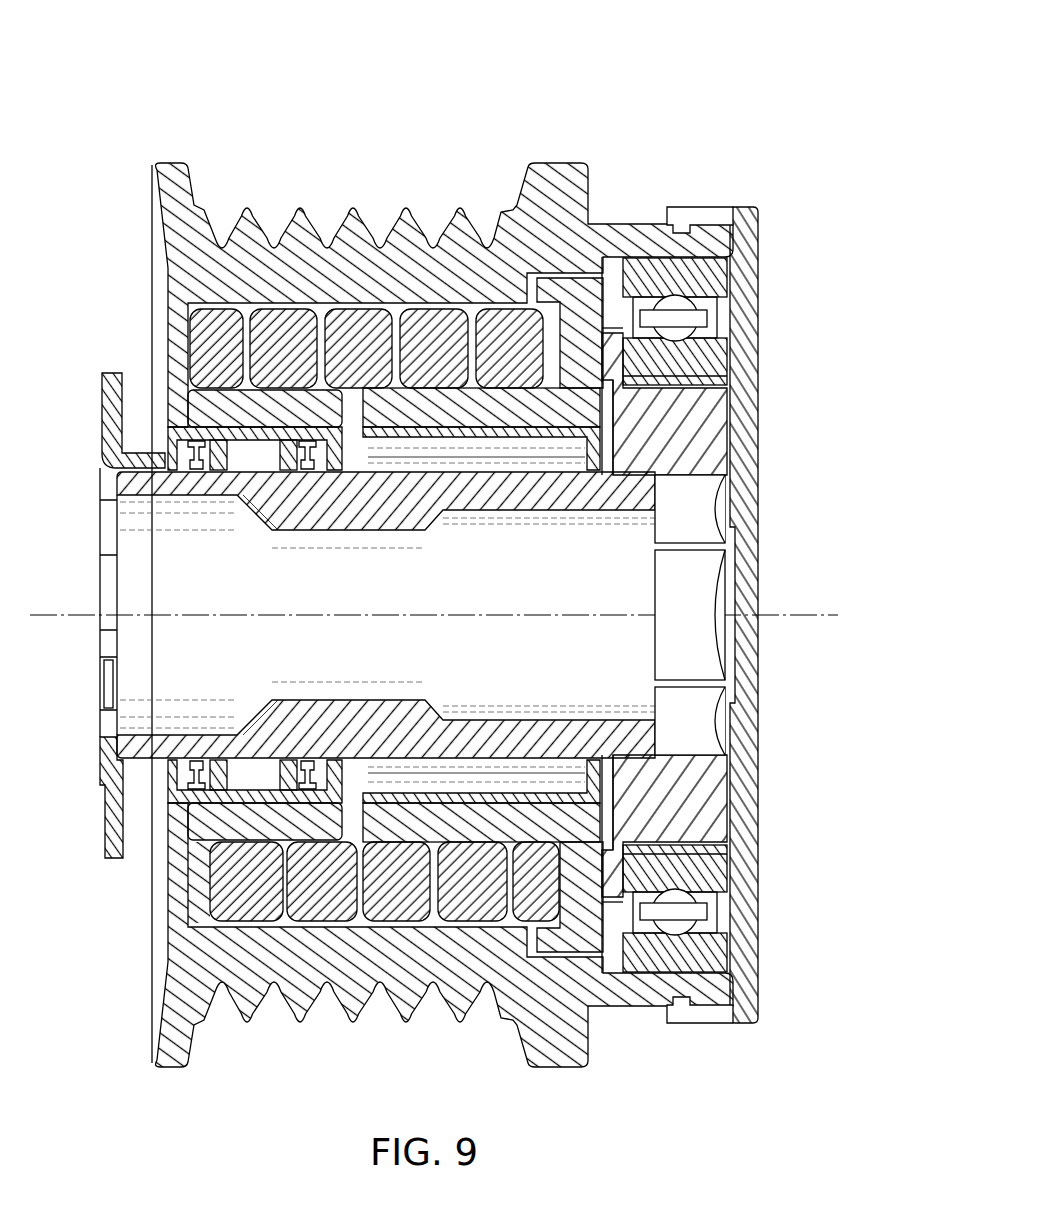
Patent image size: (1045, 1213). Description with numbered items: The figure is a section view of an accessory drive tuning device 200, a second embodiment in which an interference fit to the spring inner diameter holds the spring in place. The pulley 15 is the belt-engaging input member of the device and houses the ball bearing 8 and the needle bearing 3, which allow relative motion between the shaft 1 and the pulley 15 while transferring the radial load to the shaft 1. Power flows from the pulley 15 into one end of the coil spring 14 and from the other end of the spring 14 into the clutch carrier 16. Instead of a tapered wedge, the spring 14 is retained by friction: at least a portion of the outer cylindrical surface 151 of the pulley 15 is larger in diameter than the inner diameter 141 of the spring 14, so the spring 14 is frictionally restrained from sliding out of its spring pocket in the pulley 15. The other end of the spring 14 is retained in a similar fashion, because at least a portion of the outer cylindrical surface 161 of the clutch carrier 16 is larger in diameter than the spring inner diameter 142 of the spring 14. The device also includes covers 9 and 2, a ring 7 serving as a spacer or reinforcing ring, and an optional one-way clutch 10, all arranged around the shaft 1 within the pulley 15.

The shaft 1 is at (125, 481).
The cover 2 is at (104, 430).
The needle bearing 3 is at (190, 455).
The ring 7 is at (609, 275).
The ball bearing 8 is at (680, 262).
The cover 9 is at (738, 288).
The one-way clutch 10 is at (604, 478).
The spring 14 is at (204, 331).
The pulley 15 is at (163, 200).
The clutch carrier 16 is at (561, 292).
The inner diameter of spring 141 is at (200, 408).
The spring inner diameter 142 is at (500, 421).
The outer cylindrical surface of pulley 151 is at (208, 396).
The outer cylindrical surface of clutch carrier 161 is at (495, 396).
The accessory drive tuning device 200 is at (508, 108).